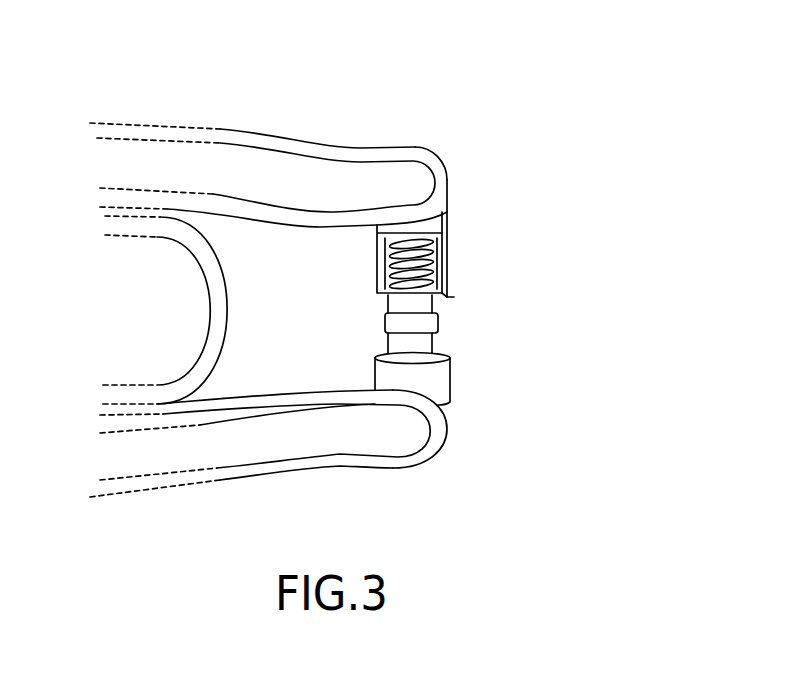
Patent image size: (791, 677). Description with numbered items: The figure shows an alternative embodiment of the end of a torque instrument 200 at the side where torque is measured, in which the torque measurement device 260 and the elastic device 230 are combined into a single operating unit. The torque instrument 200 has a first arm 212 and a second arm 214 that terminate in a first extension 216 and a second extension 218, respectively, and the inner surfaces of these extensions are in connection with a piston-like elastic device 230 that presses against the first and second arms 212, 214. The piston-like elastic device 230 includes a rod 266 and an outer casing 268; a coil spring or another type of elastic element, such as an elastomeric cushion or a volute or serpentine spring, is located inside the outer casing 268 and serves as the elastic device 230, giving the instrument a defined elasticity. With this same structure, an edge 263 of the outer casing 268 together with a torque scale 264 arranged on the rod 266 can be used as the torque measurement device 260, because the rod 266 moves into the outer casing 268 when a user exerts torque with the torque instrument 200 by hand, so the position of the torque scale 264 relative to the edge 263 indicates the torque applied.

The torque instrument 200 is at (538, 463).
The first arm 212 is at (148, 160).
The second arm 214 is at (243, 438).
The first extension 216 is at (418, 140).
The second extension 218 is at (415, 477).
The elastic device 230 is at (500, 262).
The torque measurement device 260 is at (457, 250).
The edge 263 is at (450, 297).
The torque scale 264 is at (427, 323).
The rod 266 is at (397, 341).
The outer casing 268 is at (380, 257).